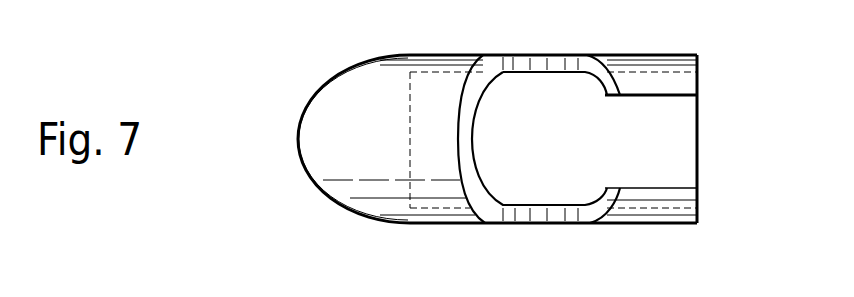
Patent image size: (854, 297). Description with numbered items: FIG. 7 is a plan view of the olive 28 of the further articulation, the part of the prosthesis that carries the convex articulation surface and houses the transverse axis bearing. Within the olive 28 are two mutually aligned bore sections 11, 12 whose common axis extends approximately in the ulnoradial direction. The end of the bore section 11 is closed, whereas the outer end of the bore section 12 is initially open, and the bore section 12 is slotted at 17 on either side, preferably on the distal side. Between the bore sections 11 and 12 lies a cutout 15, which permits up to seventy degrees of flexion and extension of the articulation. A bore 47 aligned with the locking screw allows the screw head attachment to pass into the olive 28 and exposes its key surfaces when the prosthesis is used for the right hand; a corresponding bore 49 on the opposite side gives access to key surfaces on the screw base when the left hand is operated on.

The olive 28 is at (360, 62).
The bore section 11 is at (438, 102).
The cutout 15 is at (547, 63).
The bore section 12 is at (643, 120).
The slot 17 is at (677, 101).
The bore 49 is at (672, 56).
The bore 47 is at (666, 222).